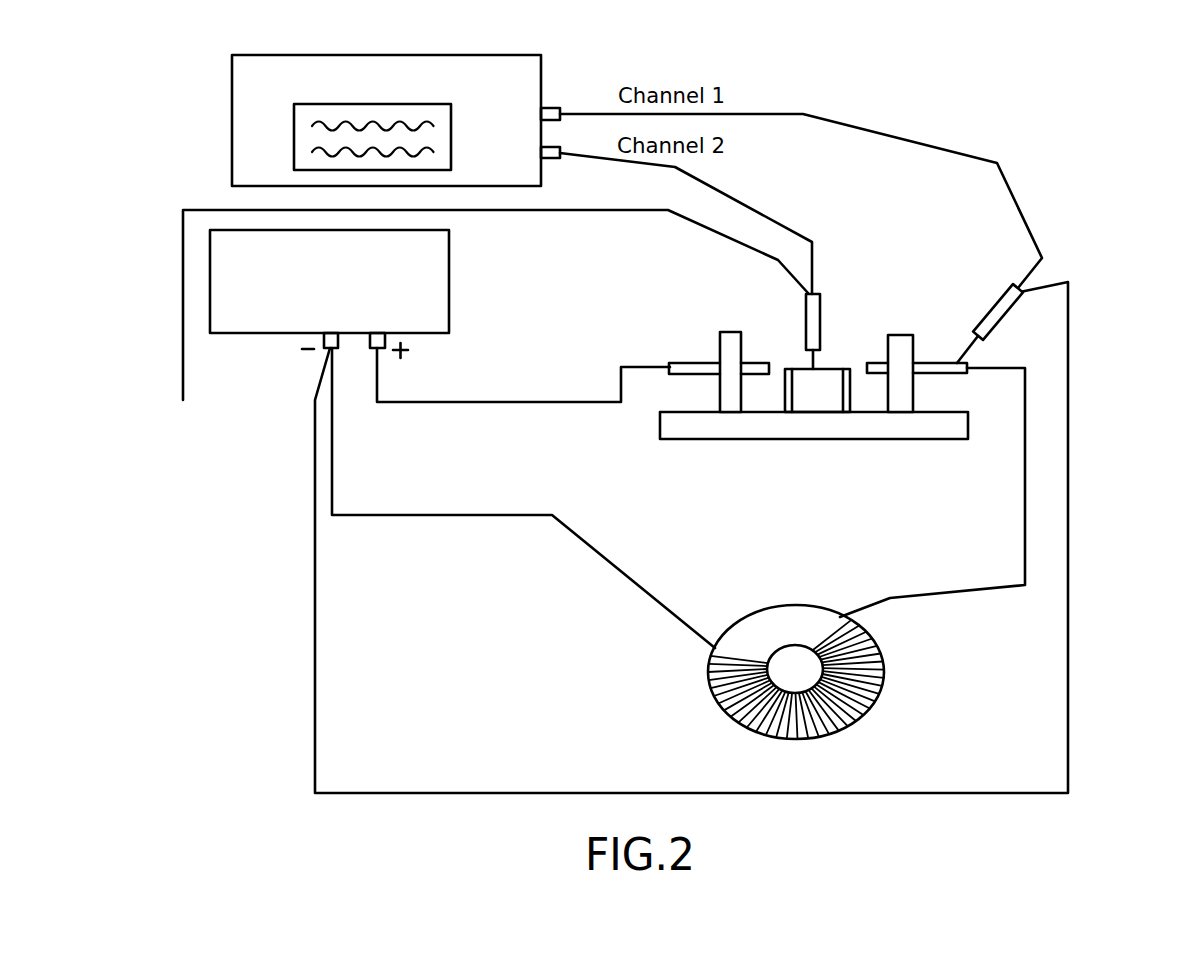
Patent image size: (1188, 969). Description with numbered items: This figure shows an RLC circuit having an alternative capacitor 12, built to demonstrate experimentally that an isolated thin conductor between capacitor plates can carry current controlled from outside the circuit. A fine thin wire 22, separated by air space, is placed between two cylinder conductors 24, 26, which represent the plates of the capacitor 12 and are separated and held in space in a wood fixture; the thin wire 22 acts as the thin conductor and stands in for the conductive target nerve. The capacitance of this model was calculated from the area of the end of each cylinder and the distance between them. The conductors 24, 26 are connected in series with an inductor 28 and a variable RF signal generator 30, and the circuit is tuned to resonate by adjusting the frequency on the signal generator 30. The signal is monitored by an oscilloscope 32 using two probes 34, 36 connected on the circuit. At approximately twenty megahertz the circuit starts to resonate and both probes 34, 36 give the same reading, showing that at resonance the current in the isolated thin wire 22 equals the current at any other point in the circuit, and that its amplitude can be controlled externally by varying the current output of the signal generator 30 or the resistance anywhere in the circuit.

The capacitor 12 is at (681, 440).
The thin wire 22 is at (837, 369).
The conductor 24 is at (687, 362).
The conductor 26 is at (937, 363).
The inductor 28 is at (710, 673).
The signal generator 30 is at (449, 260).
The oscilloscope 32 is at (232, 117).
The probe 34 is at (805, 315).
The probe 36 is at (1010, 315).